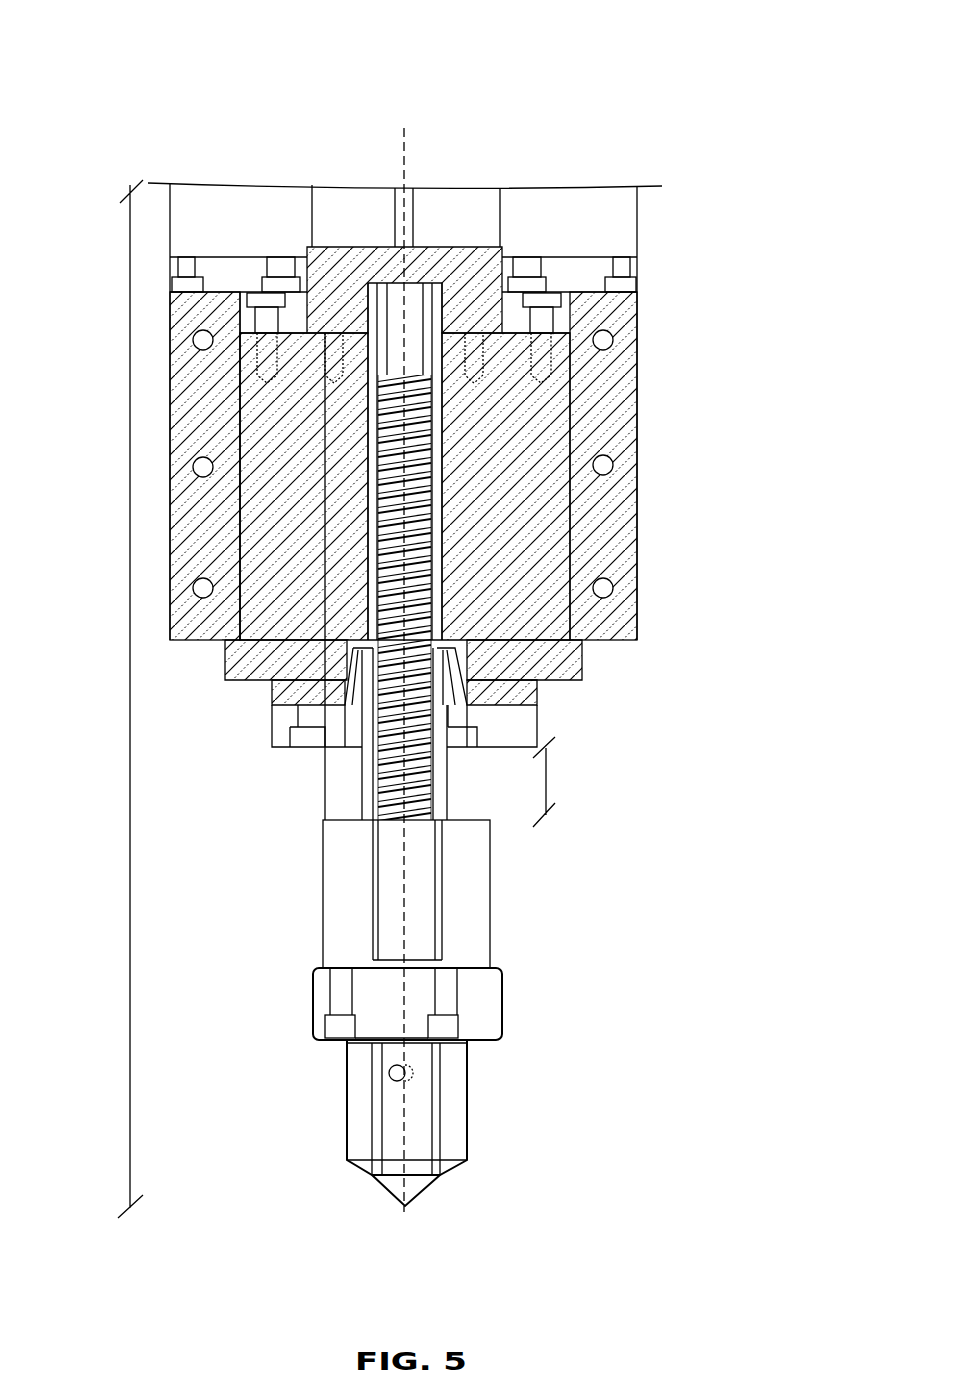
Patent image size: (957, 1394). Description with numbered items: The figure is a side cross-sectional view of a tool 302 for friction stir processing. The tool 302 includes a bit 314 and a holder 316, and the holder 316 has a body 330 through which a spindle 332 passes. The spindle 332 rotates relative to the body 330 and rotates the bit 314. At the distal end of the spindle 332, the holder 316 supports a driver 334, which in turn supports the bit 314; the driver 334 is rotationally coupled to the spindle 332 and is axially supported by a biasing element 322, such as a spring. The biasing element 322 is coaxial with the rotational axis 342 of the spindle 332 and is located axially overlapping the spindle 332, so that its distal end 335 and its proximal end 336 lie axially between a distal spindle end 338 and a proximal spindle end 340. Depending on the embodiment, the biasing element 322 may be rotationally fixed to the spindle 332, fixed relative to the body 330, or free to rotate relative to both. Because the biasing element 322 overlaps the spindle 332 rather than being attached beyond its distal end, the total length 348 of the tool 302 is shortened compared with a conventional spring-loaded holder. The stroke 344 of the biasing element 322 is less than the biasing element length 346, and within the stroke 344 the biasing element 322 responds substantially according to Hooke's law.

The tool 302 is at (780, 62).
The holder 316 is at (146, 142).
The rotational axis 342 is at (404, 167).
The proximal spindle end 340 is at (572, 337).
The proximal end of the biasing element 336 is at (418, 374).
The body 330 is at (459, 533).
The biasing element 322 is at (434, 533).
The spindle 332 is at (543, 612).
The biasing element length 346 is at (325, 532).
The distal spindle end 338 is at (226, 643).
The total length 348 is at (128, 771).
The stroke 344 is at (548, 771).
The distal end of the biasing element 335 is at (430, 820).
The driver 334 is at (467, 1098).
The bit 314 is at (408, 1183).